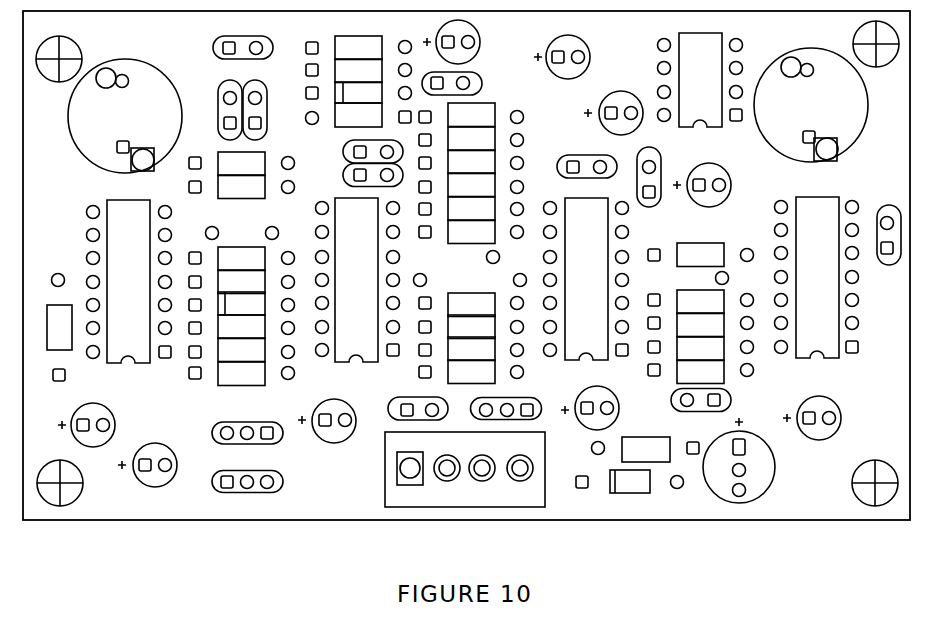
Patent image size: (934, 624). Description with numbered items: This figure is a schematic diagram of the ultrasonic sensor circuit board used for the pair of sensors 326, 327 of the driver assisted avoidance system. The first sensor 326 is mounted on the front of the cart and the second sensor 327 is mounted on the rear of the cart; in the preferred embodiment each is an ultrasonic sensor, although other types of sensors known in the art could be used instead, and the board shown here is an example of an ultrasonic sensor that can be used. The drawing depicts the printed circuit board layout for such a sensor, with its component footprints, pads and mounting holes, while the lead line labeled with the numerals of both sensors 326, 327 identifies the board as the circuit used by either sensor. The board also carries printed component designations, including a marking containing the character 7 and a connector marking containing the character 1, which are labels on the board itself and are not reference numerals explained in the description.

The first sensor 326 is at (466, 306).
The second sensor 327 is at (258, 532).
The mounting component MES#7C 7 is at (323, 426).
The connector J1 1 is at (450, 469).